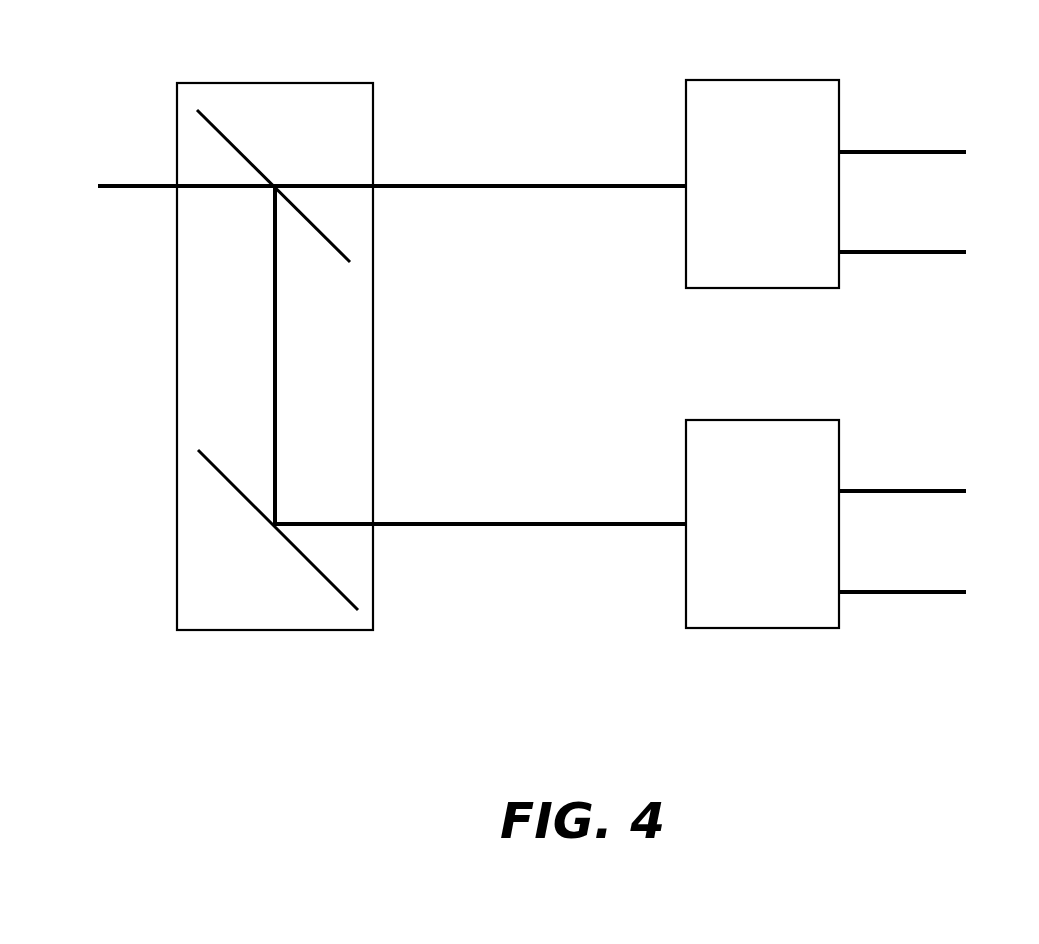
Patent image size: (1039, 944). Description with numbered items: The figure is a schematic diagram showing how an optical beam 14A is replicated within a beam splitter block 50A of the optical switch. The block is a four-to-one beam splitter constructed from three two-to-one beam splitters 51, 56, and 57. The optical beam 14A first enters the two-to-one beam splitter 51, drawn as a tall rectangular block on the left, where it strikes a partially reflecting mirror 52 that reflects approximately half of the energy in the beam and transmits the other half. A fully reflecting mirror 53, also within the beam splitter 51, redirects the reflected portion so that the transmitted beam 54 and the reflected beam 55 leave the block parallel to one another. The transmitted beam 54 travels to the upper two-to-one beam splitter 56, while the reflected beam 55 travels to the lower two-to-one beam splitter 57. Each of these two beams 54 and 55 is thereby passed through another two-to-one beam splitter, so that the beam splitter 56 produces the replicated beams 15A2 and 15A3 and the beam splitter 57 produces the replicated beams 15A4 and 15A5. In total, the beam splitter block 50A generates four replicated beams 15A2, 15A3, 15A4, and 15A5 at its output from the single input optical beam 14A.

The optical beam 14A is at (152, 186).
The beam splitter block 50A is at (495, 643).
The 2:1 beam splitter 51 is at (343, 83).
The partially reflecting mirror 52 is at (330, 247).
The fully reflecting mirror 53 is at (250, 505).
The transmitted beam 54 is at (532, 185).
The reflected beam 55 is at (503, 524).
The 2:1 beam splitter 56 is at (777, 80).
The 2:1 beam splitter 57 is at (770, 628).
The replicated beam 15A2 is at (886, 152).
The replicated beam 15A3 is at (898, 252).
The replicated beam 15A4 is at (900, 491).
The replicated beam 15A5 is at (903, 592).